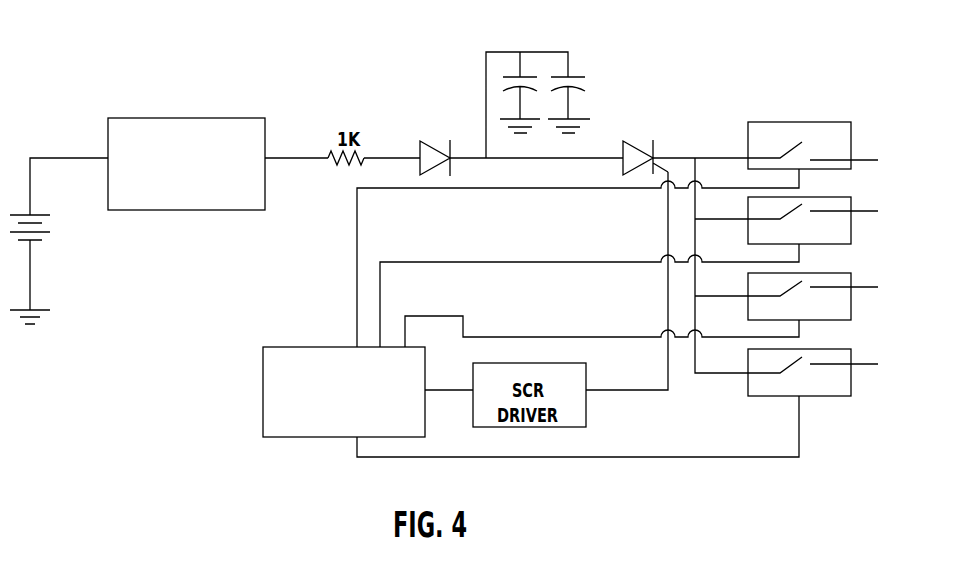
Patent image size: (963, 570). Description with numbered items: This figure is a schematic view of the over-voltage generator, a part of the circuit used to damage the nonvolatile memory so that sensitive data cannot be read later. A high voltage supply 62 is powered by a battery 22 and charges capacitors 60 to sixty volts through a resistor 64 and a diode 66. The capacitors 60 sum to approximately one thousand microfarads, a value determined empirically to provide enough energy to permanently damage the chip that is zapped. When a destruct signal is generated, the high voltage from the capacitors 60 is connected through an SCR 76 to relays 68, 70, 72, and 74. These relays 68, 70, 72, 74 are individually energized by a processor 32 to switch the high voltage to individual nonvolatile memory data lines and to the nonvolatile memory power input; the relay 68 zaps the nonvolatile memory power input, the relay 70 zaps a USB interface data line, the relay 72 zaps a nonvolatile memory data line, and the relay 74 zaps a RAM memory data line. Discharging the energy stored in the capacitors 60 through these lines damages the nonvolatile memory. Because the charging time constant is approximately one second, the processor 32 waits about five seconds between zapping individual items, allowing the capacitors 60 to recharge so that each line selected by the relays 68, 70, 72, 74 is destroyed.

The battery 22 is at (40, 215).
The high voltage supply 62 is at (186, 164).
The resistor 64 is at (350, 167).
The diode 66 is at (440, 142).
The capacitors 60 is at (560, 77).
The SCR 76 is at (635, 140).
The relay 68 is at (836, 153).
The relay 70 is at (836, 238).
The relay 72 is at (836, 316).
The relay 74 is at (836, 393).
The processor 32 is at (355, 420).